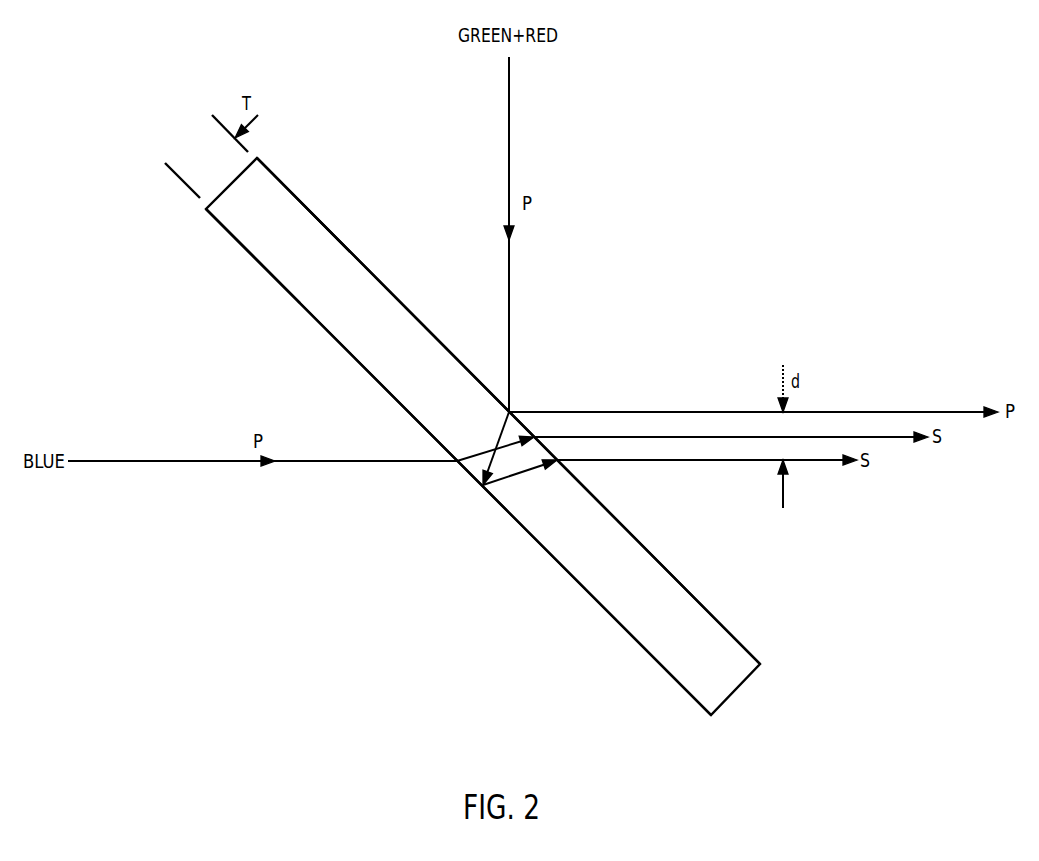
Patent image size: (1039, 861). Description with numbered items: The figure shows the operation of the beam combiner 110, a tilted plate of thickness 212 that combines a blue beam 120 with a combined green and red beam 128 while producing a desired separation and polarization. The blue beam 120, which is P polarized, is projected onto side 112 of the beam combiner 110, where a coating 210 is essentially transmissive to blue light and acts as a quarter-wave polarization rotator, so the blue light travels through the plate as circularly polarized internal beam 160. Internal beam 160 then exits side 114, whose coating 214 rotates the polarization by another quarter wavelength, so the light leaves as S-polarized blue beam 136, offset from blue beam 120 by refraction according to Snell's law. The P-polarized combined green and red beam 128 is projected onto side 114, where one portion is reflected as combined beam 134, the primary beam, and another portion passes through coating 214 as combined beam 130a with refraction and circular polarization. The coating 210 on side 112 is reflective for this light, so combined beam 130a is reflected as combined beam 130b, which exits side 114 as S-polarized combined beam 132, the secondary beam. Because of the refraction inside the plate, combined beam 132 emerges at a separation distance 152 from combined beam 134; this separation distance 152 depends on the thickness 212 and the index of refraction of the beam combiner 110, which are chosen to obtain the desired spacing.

The beam combiner 110 is at (692, 696).
The side of beam combiner 112 is at (647, 651).
The side of beam combiner 114 is at (708, 610).
The blue beam 120 is at (152, 462).
The combined green and red beam 128 is at (510, 115).
The combined beam 130a is at (502, 428).
The combined beam 130b is at (518, 477).
The combined beam 132 is at (663, 462).
The combined beam 134 is at (592, 412).
The blue beam 136 is at (650, 437).
The separation distance 152 is at (780, 377).
The internal beam 160 is at (483, 452).
The coating 210 is at (253, 256).
The thickness 212 is at (177, 195).
The coating 214 is at (287, 188).